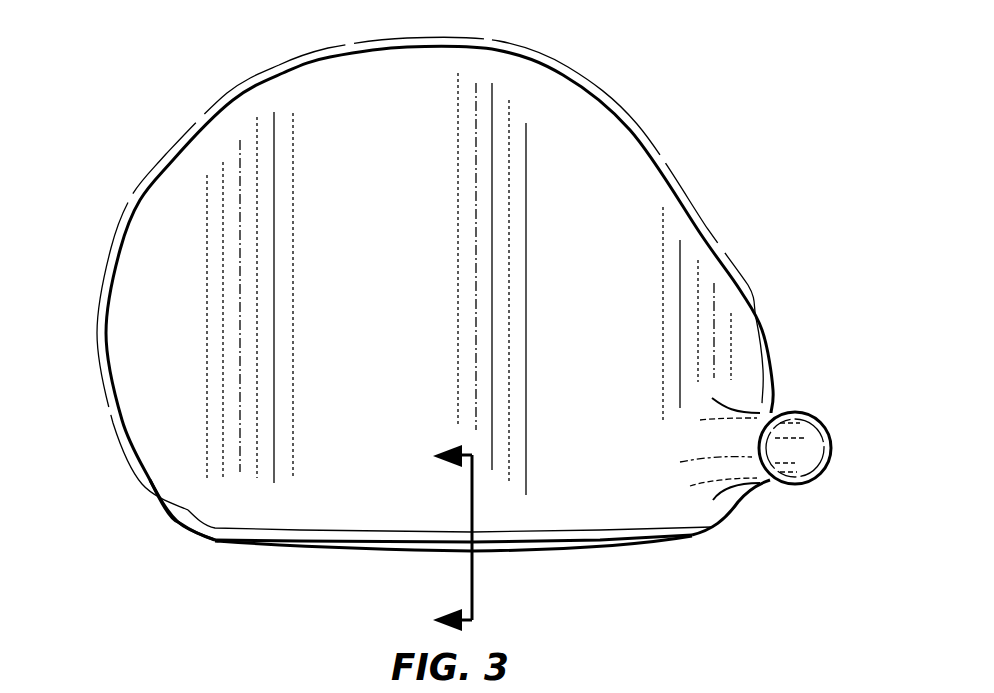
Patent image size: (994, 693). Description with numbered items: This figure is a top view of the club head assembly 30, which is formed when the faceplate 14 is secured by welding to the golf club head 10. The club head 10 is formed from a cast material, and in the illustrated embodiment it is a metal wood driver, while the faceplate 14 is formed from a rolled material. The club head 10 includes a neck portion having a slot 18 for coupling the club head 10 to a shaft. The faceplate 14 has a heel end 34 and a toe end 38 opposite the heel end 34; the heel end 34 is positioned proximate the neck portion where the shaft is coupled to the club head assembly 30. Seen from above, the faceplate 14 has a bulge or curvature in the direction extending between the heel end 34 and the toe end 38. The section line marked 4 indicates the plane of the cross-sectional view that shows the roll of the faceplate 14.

The club head assembly 30 is at (124, 83).
The golf club head 10 is at (312, 100).
The faceplate 14 is at (331, 570).
The slot 18 is at (792, 416).
The heel end 34 is at (683, 540).
The toe end 38 is at (248, 542).
The section line 4- 4 is at (435, 528).